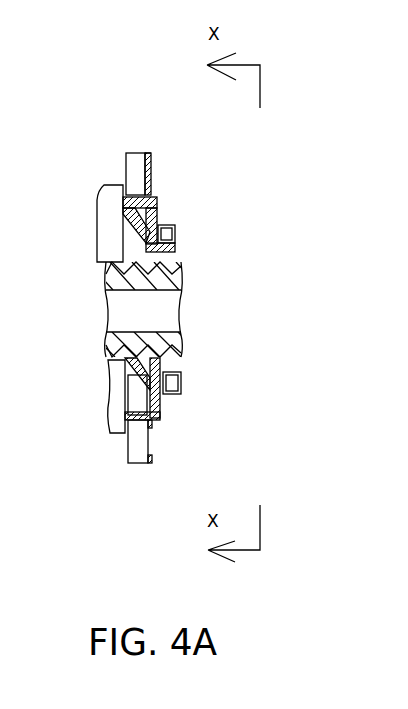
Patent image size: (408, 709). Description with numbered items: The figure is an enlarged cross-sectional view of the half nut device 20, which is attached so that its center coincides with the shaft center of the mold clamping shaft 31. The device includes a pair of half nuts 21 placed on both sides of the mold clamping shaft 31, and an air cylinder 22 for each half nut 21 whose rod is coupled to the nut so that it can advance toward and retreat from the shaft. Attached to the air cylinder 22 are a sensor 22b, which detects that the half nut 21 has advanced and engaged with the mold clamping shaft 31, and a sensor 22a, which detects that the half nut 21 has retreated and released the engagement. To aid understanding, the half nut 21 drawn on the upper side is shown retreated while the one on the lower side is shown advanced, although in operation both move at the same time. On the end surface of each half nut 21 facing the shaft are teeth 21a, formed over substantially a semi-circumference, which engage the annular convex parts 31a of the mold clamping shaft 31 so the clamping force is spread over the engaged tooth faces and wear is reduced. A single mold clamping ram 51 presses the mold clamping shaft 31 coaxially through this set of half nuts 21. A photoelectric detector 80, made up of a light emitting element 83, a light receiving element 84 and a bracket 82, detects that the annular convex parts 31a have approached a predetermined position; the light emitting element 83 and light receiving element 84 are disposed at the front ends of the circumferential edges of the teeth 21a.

The half nut device 20 is at (175, 286).
The half nut 21 is at (158, 198).
The teeth 21a is at (160, 256).
The air cylinder 22 is at (137, 153).
The sensor 22a is at (147, 158).
The sensor 22b is at (149, 185).
The mold clamping shaft 31 is at (163, 317).
The annular convex parts 31a is at (170, 263).
The mold clamping ram 51 is at (112, 183).
The photoelectric detector 80 is at (212, 415).
The bracket 82 is at (183, 383).
The light emitting element 83 is at (174, 228).
The light receiving element 84 is at (183, 396).